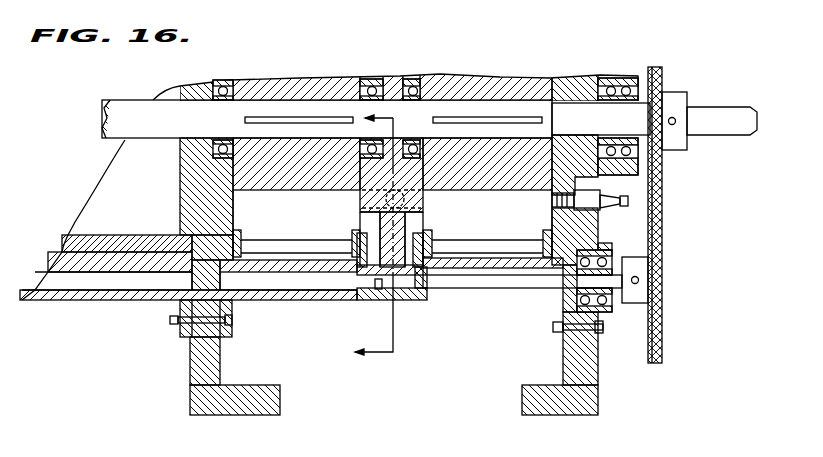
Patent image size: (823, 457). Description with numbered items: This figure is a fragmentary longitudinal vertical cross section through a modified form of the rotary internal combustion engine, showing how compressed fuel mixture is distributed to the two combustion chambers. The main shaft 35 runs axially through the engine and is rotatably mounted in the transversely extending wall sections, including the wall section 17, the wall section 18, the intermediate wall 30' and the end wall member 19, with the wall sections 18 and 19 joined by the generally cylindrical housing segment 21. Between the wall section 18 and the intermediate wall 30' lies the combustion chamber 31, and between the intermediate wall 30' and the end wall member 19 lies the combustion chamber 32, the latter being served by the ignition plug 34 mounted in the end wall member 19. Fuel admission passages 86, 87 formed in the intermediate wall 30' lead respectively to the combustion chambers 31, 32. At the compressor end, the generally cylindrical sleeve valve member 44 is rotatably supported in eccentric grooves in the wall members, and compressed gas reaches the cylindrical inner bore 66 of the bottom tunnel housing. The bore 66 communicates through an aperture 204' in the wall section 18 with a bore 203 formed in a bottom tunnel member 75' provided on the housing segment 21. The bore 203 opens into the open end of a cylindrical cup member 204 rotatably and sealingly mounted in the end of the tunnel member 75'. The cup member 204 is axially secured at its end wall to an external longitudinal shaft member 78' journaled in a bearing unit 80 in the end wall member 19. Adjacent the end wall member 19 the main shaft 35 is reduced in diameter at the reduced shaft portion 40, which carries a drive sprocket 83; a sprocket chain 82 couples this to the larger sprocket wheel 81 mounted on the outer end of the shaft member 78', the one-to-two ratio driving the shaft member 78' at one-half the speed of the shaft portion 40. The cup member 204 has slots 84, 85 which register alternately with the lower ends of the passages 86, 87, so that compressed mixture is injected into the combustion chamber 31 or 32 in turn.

The main shaft 35 is at (133, 113).
The reduced shaft portion 40 is at (713, 115).
The drive sprocket 83 is at (672, 92).
The sprocket chain 82 is at (662, 193).
The ignition plug 34 is at (602, 211).
The intermediate wall 30' is at (413, 202).
The combustion chamber 31 is at (304, 216).
The combustion chamber 32 is at (494, 216).
The fuel admission passage 86 is at (366, 223).
The fuel admission passage 87 is at (407, 224).
The sleeve valve member 44 is at (121, 237).
The cylindrical inner bore 66 is at (83, 285).
The aperture 204' is at (178, 317).
The housing segment 21 is at (222, 337).
The wall section 18 is at (210, 367).
The bore 203 is at (270, 283).
The bottom tunnel member 75' is at (188, 321).
The slot 84 is at (377, 295).
The slot 85 is at (384, 298).
The cylindrical cup member 204 is at (423, 302).
The external longitudinal shaft member 78' is at (522, 315).
The bearing unit 80 is at (563, 308).
The sprocket wheel 81 is at (637, 303).
The end wall member 19 is at (587, 372).
The wall section 17 is at (374, 244).